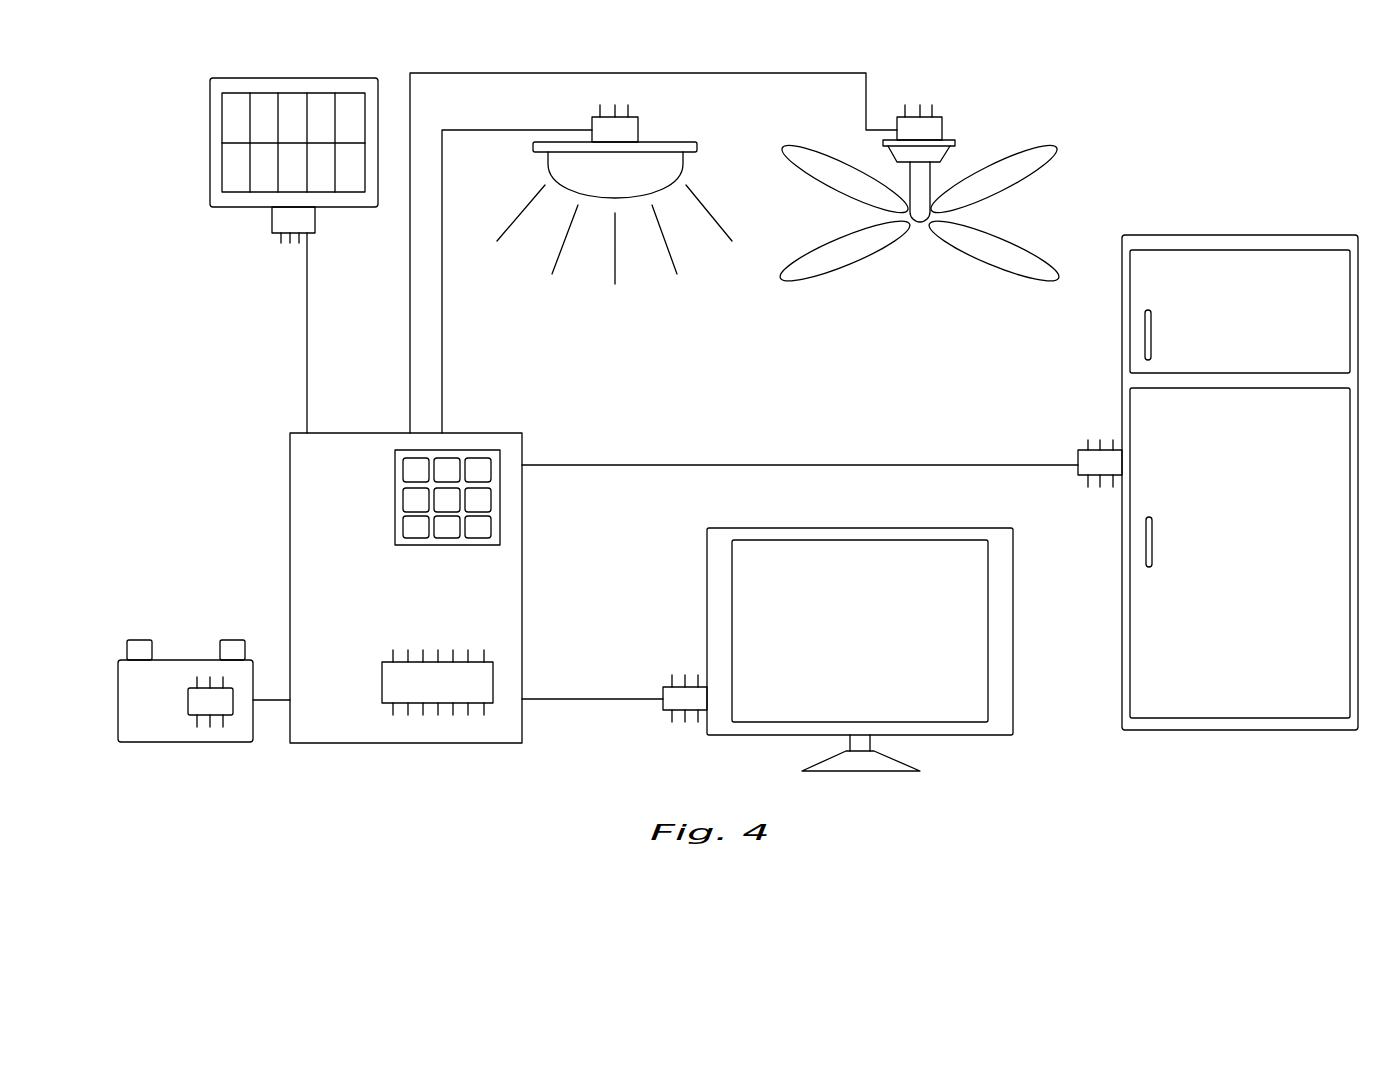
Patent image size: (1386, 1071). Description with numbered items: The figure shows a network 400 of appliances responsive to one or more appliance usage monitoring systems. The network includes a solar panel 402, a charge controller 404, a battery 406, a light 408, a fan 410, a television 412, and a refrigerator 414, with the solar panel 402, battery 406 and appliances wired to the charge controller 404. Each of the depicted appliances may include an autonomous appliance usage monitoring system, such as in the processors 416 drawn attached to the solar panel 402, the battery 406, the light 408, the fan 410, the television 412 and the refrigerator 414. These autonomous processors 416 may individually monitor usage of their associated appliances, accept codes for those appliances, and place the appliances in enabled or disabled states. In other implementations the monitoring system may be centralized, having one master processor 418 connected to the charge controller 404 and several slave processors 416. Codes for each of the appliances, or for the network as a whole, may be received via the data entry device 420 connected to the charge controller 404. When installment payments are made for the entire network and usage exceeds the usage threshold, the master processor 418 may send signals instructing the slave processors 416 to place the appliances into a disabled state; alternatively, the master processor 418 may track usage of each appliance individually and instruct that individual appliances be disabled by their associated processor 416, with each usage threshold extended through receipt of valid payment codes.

The system 400 is at (1203, 108).
The solar panel 402 is at (222, 162).
The charge controller 404 is at (290, 532).
The battery 406 is at (177, 660).
The light 408 is at (598, 173).
The fan 410 is at (1005, 255).
The television 412 is at (878, 528).
The refrigerator 414 is at (1253, 235).
The processor 416 is at (278, 222).
The master processor 418 is at (390, 680).
The data entry device 420 is at (395, 505).